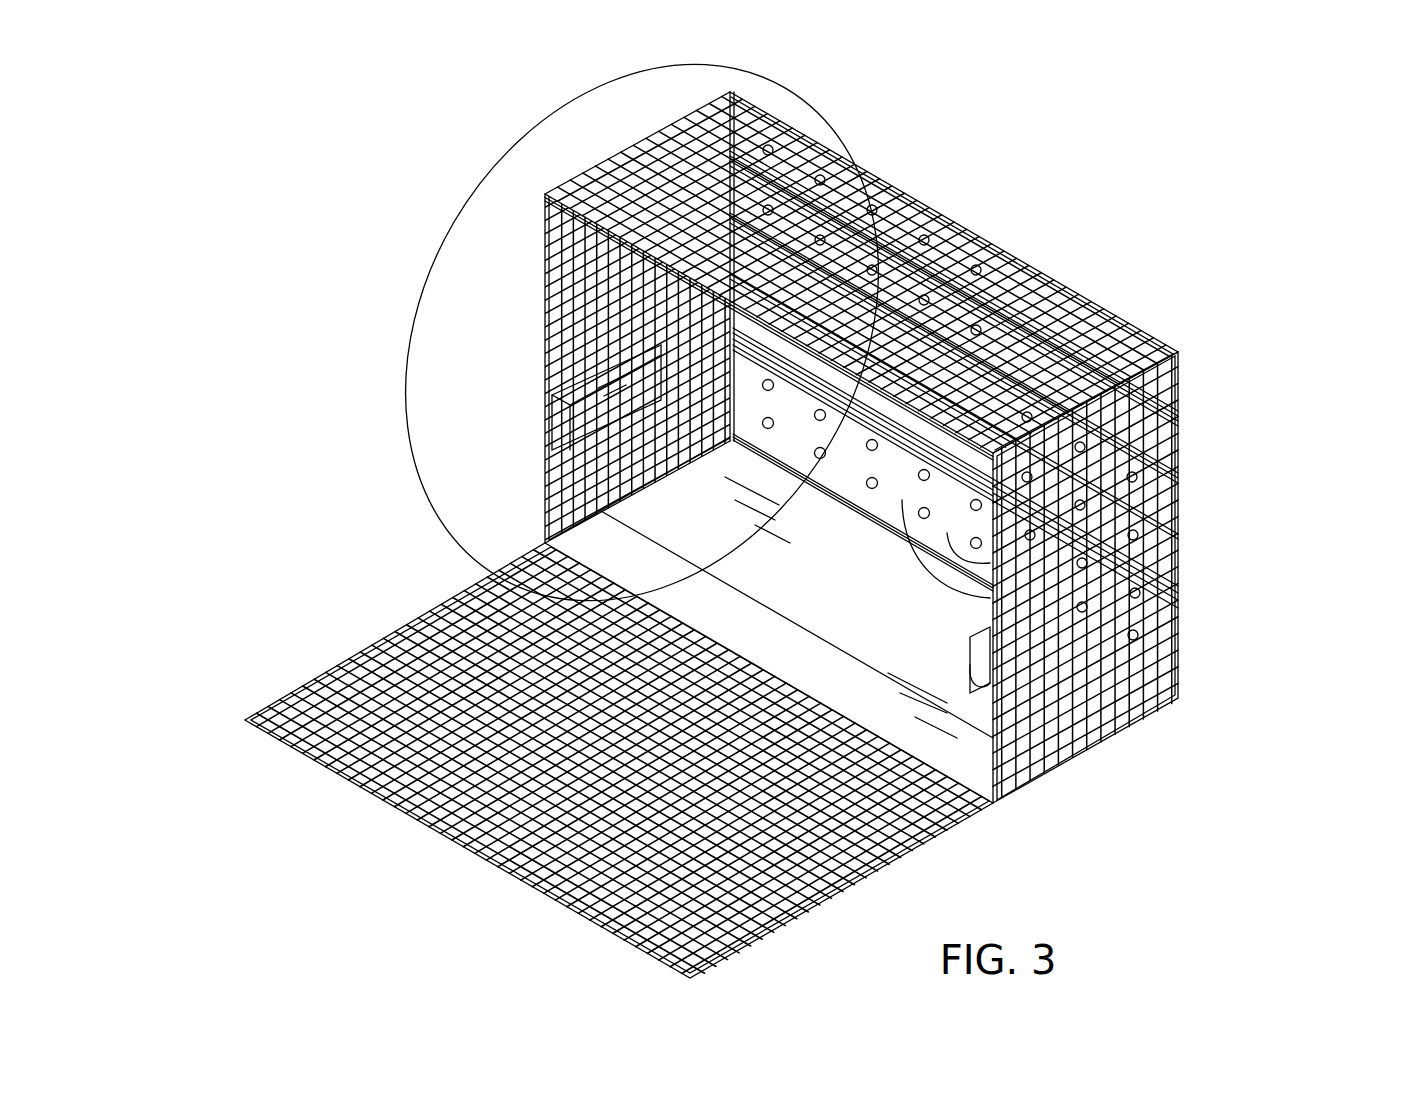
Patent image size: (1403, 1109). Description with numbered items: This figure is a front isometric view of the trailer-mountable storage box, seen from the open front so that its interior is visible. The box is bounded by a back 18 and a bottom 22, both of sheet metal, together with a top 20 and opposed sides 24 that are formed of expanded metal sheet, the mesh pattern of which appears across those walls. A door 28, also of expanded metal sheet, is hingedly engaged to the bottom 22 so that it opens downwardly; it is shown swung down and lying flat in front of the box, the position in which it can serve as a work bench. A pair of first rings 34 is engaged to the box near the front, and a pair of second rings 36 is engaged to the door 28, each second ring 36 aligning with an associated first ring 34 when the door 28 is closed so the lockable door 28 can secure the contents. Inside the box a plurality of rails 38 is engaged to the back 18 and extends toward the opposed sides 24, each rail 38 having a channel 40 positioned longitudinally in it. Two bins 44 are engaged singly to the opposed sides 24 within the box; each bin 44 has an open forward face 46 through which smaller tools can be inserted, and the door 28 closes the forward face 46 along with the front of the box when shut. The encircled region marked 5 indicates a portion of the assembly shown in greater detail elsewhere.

The detail region of FIG. 5 is at (454, 213).
The back 18 is at (1110, 578).
The top 20 is at (1057, 307).
The bottom 22 is at (788, 643).
The opposed sides 24 is at (565, 335).
The door 28 is at (440, 828).
The first rings 34 is at (547, 193).
The second rings 36 is at (687, 975).
The rails 38 is at (1120, 618).
The channel 40 is at (1160, 537).
The bins 44 is at (598, 289).
The forward face 46 is at (1020, 710).